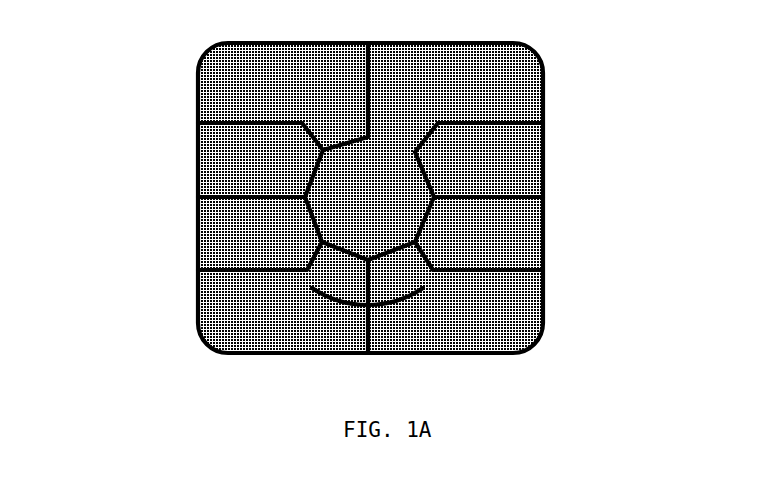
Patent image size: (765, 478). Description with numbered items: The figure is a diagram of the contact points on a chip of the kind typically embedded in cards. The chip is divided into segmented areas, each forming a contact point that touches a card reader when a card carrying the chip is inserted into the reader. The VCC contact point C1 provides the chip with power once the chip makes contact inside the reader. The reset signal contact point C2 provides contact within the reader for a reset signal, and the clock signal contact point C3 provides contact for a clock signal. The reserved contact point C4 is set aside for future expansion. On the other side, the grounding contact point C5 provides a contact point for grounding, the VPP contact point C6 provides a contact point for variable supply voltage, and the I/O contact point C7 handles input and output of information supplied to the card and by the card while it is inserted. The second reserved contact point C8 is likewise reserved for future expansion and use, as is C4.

The VCC contact point C1 is at (199, 96).
The reset signal contact point C2 is at (176, 160).
The clock signal contact point C3 is at (176, 233).
The reserved contact point C4 is at (199, 297).
The grounding contact point C5 is at (508, 151).
The VPP contact point C6 is at (563, 160).
The I/O contact point C7 is at (563, 233).
The second reserved contact point C8 is at (501, 297).